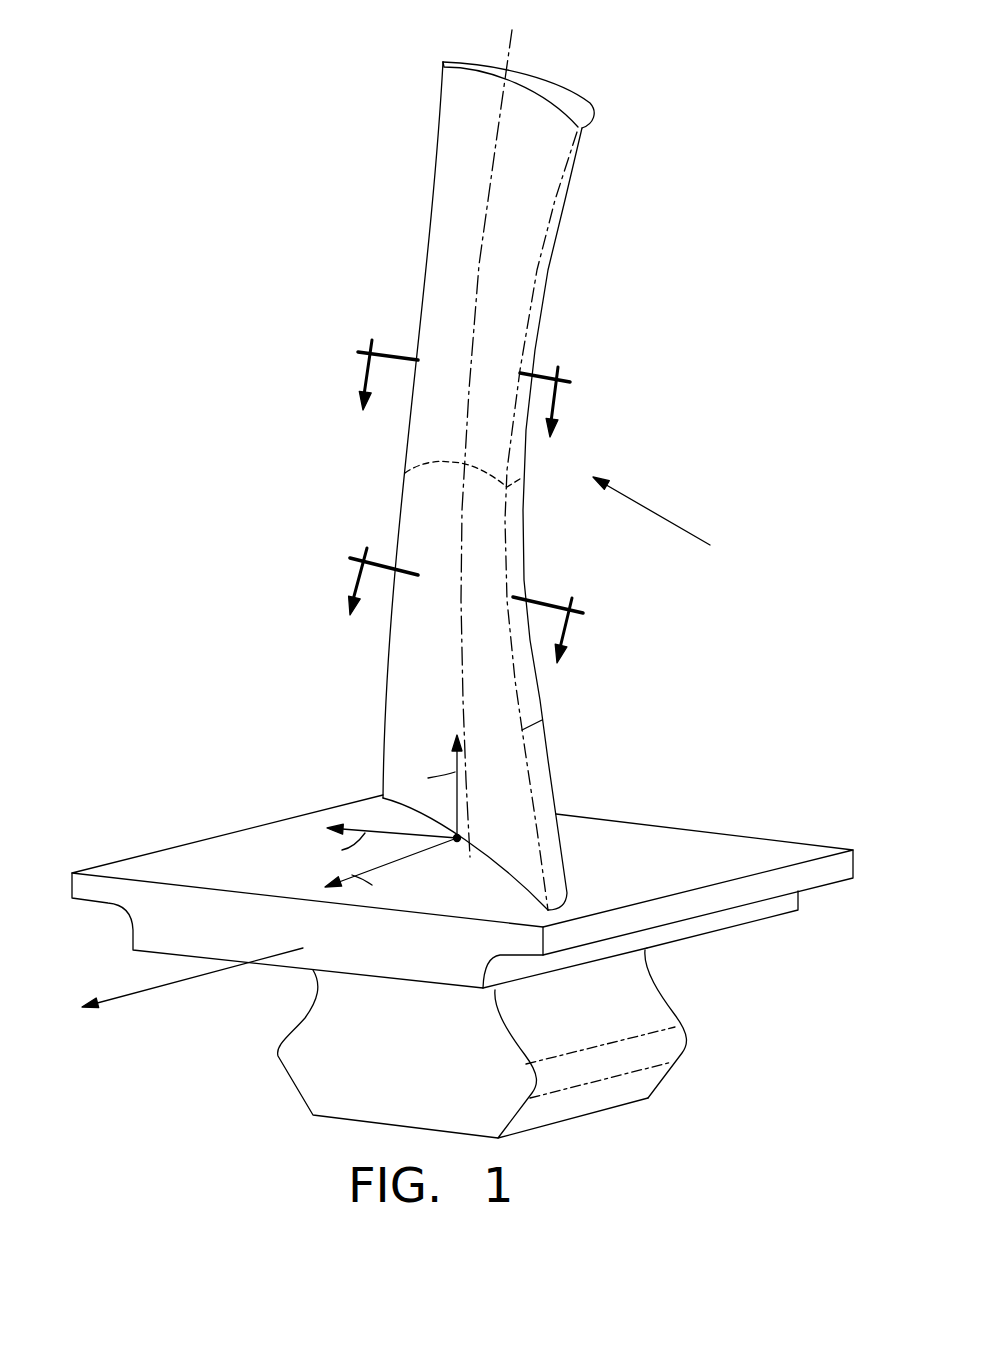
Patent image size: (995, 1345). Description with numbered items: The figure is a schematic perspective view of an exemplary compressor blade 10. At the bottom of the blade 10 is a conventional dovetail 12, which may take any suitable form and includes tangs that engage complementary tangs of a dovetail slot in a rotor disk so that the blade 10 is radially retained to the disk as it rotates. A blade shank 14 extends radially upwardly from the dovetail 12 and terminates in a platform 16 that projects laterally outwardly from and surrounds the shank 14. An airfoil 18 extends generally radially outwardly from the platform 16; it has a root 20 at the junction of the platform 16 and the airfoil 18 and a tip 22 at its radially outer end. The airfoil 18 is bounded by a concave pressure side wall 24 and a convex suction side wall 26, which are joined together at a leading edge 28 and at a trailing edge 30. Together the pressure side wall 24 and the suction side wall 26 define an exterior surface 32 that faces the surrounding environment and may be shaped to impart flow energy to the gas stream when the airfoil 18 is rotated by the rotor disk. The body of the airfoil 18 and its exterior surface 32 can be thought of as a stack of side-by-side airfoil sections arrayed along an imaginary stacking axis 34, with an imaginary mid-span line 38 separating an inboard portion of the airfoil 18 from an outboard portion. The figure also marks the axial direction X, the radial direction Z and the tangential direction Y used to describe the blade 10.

The compressor blade 10 is at (670, 296).
The dovetail 12 is at (650, 1020).
The blade shank 14 is at (335, 992).
The platform 16 is at (770, 850).
The airfoil 18 is at (370, 684).
The root 20 is at (507, 875).
The tip 22 is at (577, 103).
The pressure side wall 24 is at (457, 145).
The suction side wall 26 is at (560, 218).
The leading edge 28 is at (503, 551).
The trailing edge 30 is at (398, 505).
The exterior surface 32 is at (470, 245).
The stacking axis 34 is at (513, 41).
The mid-span line 38 is at (433, 462).